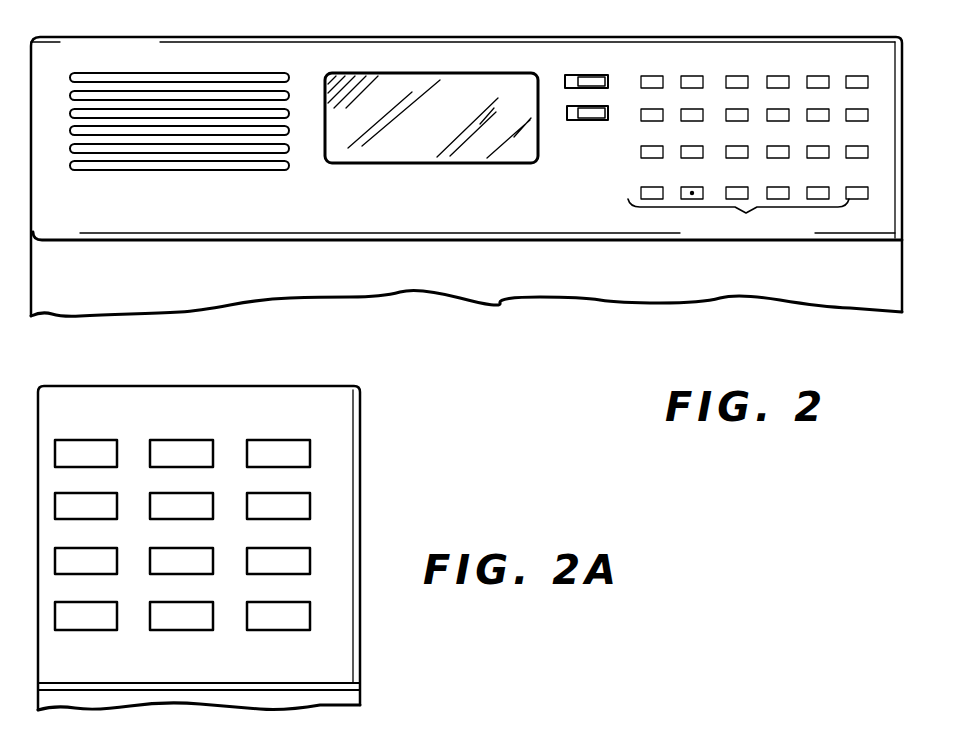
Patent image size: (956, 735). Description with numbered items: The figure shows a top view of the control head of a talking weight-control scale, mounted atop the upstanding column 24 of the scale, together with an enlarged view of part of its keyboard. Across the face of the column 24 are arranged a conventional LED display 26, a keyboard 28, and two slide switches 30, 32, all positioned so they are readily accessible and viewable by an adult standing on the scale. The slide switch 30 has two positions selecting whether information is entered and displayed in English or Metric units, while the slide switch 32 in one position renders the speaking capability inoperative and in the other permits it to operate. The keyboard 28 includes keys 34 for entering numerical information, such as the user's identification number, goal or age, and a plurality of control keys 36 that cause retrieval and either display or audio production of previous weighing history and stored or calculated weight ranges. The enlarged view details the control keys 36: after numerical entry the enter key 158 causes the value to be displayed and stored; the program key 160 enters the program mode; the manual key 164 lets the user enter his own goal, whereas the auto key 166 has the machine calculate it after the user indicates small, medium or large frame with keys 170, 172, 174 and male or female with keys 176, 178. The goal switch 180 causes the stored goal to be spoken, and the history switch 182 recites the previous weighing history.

In FIG. 2, the column 24 is at (500, 243).
In FIG. 2, the LED display 26 is at (460, 100).
In FIG. 2, the keyboard 28 is at (690, 32).
In FIG. 2, the slide switch 30 is at (212, 72).
In FIG. 2, the slide switch 32 is at (592, 120).
In FIG. 2, the keys 34 is at (640, 131).
In FIG. 2, the control keys 36 is at (717, 118).
In FIG. 2A, the control keys 36 is at (199, 525).
In FIG. 2A, the enter key 158 is at (86, 616).
In FIG. 2, the program key 160 is at (770, 74).
In FIG. 2A, the program key 160 is at (86, 453).
In FIG. 2A, the manual key 164 is at (86, 561).
In FIG. 2A, the auto key 166 is at (86, 506).
In FIG. 2A, the small frame key 170 is at (181, 453).
In FIG. 2A, the medium frame key 172 is at (181, 506).
In FIG. 2A, the large frame key 174 is at (181, 561).
In FIG. 2A, the male key 176 is at (278, 506).
In FIG. 2A, the female key 178 is at (278, 561).
In FIG. 2A, the goal switch 180 is at (181, 616).
In FIG. 2A, the history switch 182 is at (278, 616).